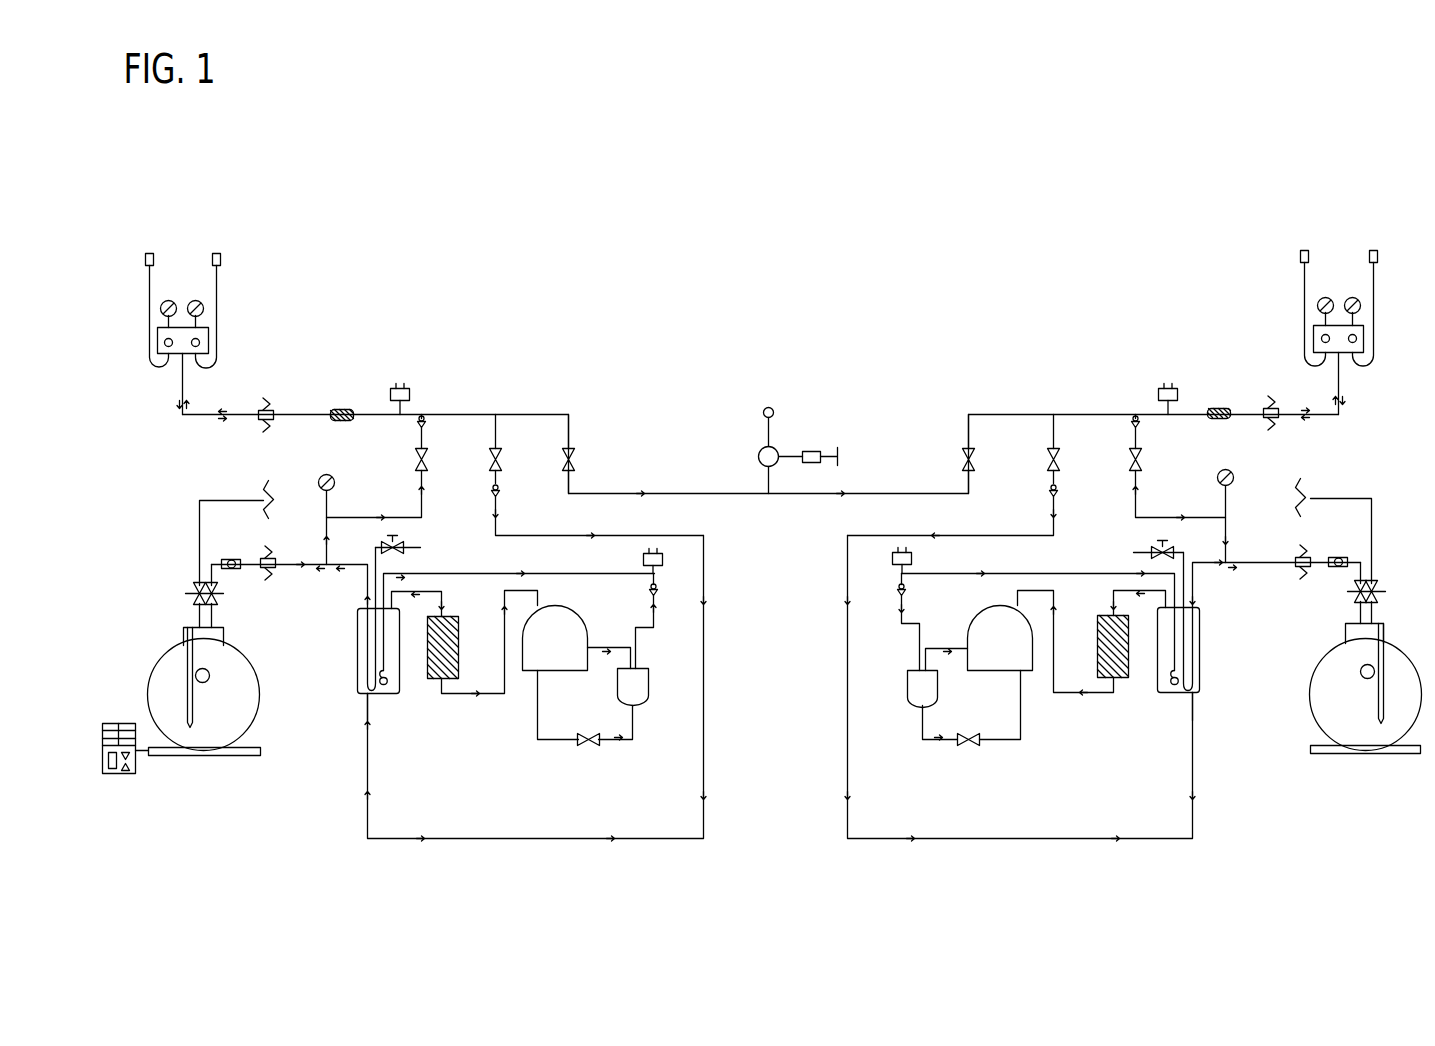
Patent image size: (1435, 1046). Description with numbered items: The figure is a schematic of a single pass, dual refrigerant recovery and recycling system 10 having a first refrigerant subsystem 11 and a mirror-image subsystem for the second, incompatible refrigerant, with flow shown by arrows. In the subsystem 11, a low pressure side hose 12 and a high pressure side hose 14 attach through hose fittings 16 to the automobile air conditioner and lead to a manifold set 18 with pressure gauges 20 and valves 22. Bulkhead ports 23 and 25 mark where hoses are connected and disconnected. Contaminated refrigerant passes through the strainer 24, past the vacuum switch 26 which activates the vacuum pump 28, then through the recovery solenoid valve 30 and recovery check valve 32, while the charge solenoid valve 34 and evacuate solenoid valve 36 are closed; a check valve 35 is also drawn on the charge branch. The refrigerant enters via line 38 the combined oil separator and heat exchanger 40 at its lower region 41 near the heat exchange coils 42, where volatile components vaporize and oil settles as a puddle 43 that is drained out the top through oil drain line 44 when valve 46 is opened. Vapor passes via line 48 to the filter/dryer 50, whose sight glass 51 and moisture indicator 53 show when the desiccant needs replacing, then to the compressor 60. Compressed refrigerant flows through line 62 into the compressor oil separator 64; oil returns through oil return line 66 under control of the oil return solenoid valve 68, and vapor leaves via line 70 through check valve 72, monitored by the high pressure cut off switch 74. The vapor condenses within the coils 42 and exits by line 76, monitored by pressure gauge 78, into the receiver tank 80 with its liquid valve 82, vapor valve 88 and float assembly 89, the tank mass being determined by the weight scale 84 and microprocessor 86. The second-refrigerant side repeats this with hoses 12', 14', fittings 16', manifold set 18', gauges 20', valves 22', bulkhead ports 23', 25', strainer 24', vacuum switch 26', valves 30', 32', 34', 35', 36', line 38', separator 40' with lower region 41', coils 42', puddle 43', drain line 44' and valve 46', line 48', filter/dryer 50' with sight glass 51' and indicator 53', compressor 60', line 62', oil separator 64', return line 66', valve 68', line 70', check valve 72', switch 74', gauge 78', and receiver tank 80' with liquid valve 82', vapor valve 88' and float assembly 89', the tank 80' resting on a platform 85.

The dual refrigerant recovery and recycling system 10 is at (527, 128).
The system for recovering and recycling R-134a refrigerant 11 is at (632, 283).
The low pressure side hose 12 is at (138, 316).
The high pressure side hose 14 is at (227, 317).
The hose fittings 16 is at (205, 238).
The manifold set 18 is at (209, 365).
The pressure gauges 20 is at (182, 286).
The valves 22 is at (157, 376).
The bulkhead port 23 is at (283, 387).
The strainer 24 is at (342, 388).
The bulkhead port 25 is at (258, 549).
The vacuum switch 26 is at (423, 389).
The vacuum pump 28 is at (773, 448).
The recovery solenoid valve 30 is at (514, 449).
The recovery check valve 32 is at (598, 511).
The charge solenoid valve 34 is at (395, 474).
The check valve 35 is at (463, 401).
The evacuate solenoid valve 36 is at (604, 456).
The line 38 is at (535, 719).
The combined oil separator and heat exchanger 40 is at (356, 658).
The lower region 41 is at (519, 647).
The heat exchange coils 42 is at (395, 714).
The oil puddle 43 is at (351, 729).
The oil drain line 44 is at (390, 578).
The valve 46 is at (407, 537).
The line 48 is at (465, 635).
The filter/dryer 50 is at (455, 631).
The sight glass 51 is at (240, 548).
The moisture indicator 53 is at (227, 537).
The compressor 60 is at (555, 624).
The line 62 is at (609, 636).
The compressor oil separator 64 is at (655, 679).
The oil return line 66 is at (614, 706).
The oil return solenoid valve 68 is at (620, 758).
The line 70 is at (666, 632).
The check valve 72 is at (672, 586).
The high pressure cut off switch 74 is at (669, 559).
The line 76 is at (362, 563).
The pressure gauge 78 is at (321, 502).
The receiver tank 80 is at (229, 689).
The liquid valve 82 is at (231, 607).
The weight scale 84 is at (240, 752).
The platform 85 is at (1378, 752).
The microprocessor 86 is at (120, 773).
The vapor valve 88 is at (181, 592).
The float assembly 89 is at (237, 515).
The low pressure side hose 12' is at (1279, 315).
The high pressure side hose 14' is at (1388, 315).
The hose fittings 16' is at (1339, 231).
The manifold set 18' is at (1339, 364).
The pressure gauges 20' is at (1339, 286).
The valves 22' is at (1304, 336).
The bulkhead port 23' is at (1290, 402).
The strainer 24' is at (1215, 387).
The bulkhead port 25' is at (1319, 583).
The vacuum switch 26' is at (1147, 374).
The recovery solenoid valve 30' is at (1030, 449).
The recovery check valve 32' is at (974, 511).
The charge solenoid valve 34' is at (1153, 468).
The check valve 35' is at (1162, 430).
The evacuate solenoid valve 36' is at (906, 444).
The line 38' is at (1020, 689).
The combined oil separator and heat exchanger 40' is at (1211, 650).
The lower region 41' is at (1085, 637).
The heat exchange coils 42' is at (1136, 708).
The oil puddle 43' is at (1159, 733).
The oil drain line 44' is at (1272, 569).
The valve 46' is at (1166, 540).
The line 48' is at (1092, 634).
The filter/dryer 50' is at (1093, 637).
The sight glass 51' is at (1328, 538).
The moisture indicator 53' is at (1328, 585).
The compressor 60' is at (988, 623).
The line 62' is at (947, 644).
The compressor oil separator 64' is at (896, 689).
The oil return line 66' is at (949, 729).
The oil return solenoid valve 68' is at (994, 764).
The line 70' is at (887, 633).
The check valve 72' is at (916, 595).
The high pressure cut off switch 74' is at (921, 559).
The pressure gauge 78' is at (1248, 510).
The receiver tank 80' is at (1367, 684).
The liquid valve 82' is at (1338, 611).
The vapor valve 88' is at (1384, 576).
The float assembly 89' is at (1338, 505).